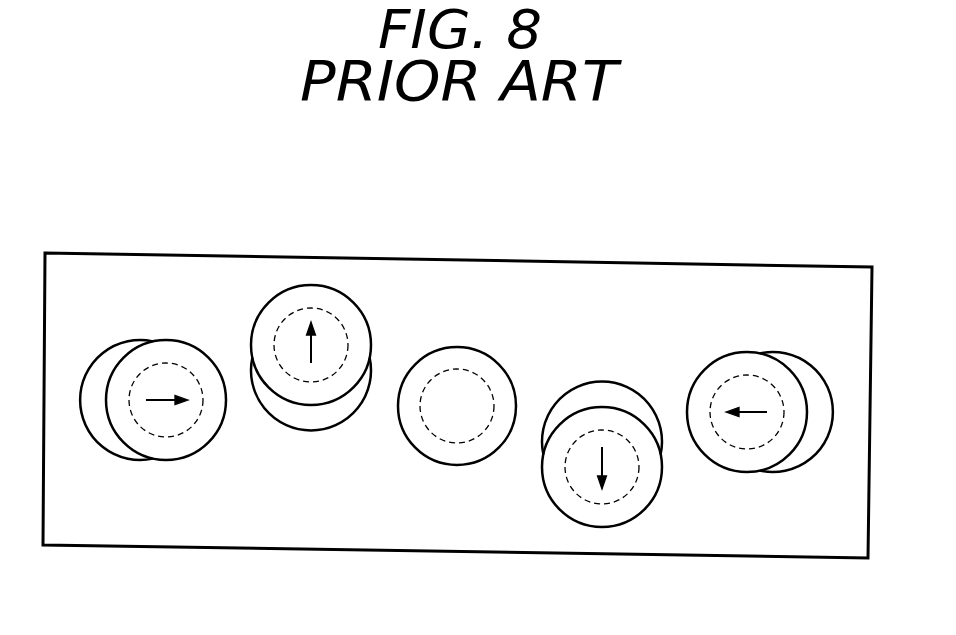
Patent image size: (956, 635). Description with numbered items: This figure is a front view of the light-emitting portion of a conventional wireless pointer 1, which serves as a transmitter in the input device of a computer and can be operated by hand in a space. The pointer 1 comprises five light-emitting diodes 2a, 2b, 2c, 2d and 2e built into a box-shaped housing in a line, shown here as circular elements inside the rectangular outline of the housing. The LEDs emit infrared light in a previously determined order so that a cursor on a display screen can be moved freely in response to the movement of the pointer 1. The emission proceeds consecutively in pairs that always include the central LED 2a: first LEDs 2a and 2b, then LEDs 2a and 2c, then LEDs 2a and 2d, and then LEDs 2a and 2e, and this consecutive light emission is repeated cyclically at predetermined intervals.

The pointer 1 is at (805, 258).
The central light-emitting diode 2a is at (476, 375).
The light-emitting diode 2b is at (185, 368).
The light-emitting diode 2c is at (748, 377).
The light-emitting diode 2d is at (330, 316).
The light-emitting diode 2e is at (618, 437).